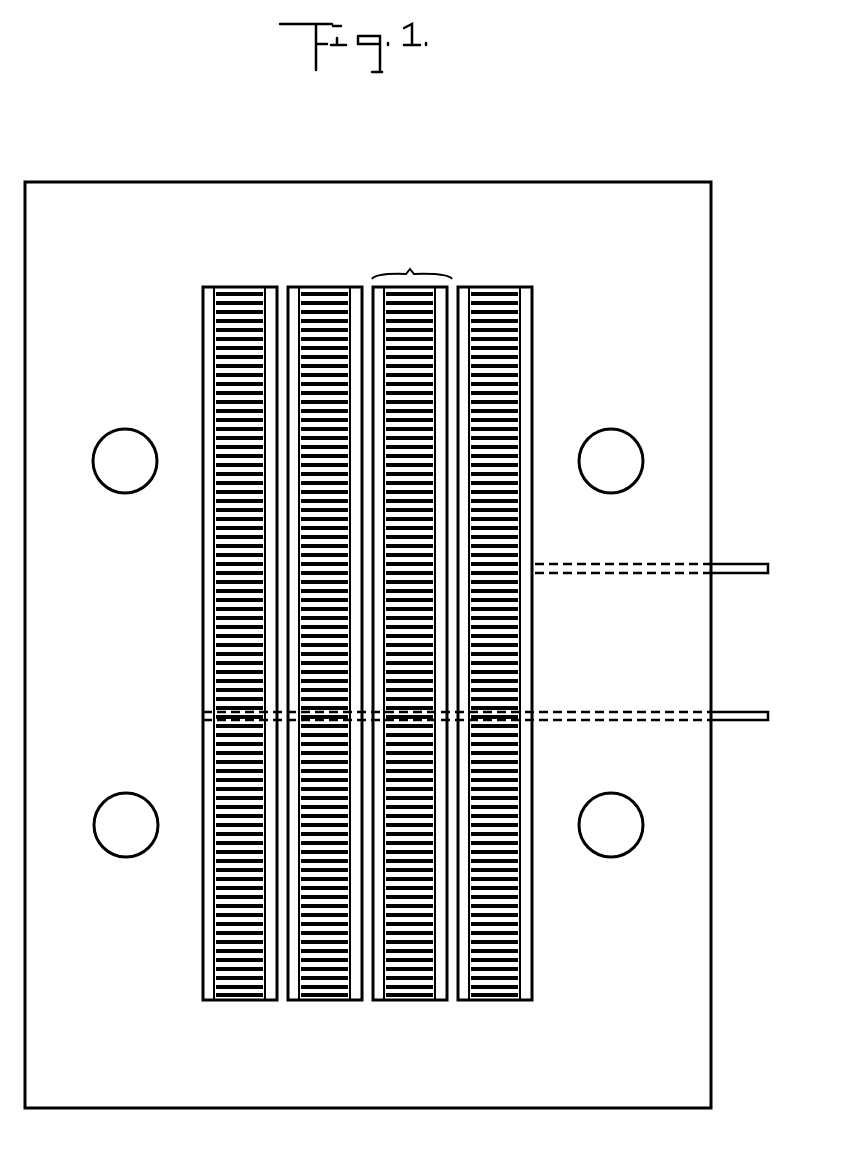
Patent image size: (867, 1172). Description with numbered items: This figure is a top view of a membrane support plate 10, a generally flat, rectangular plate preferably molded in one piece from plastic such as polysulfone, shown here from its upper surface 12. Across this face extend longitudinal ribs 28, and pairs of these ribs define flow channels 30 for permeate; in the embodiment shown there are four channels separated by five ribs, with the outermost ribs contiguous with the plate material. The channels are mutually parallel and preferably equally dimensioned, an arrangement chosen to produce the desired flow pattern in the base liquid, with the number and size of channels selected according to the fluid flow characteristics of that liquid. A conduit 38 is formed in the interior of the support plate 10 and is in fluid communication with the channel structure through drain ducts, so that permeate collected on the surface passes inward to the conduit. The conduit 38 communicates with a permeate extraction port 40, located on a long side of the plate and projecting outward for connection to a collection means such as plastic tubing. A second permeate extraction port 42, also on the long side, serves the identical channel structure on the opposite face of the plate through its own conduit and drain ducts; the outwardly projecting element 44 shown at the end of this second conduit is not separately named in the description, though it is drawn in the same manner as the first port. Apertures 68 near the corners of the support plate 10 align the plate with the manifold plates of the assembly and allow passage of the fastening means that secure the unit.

The support plate 10 is at (218, 205).
The upper surface 12 is at (365, 595).
The flow channels 30 is at (199, 279).
The longitudinal ribs 28 is at (278, 1003).
The conduit 38 is at (655, 710).
The permeate extraction port 40 is at (755, 710).
The second permeate extraction port 42 is at (648, 562).
The upper port 44 is at (750, 562).
The apertures 68 is at (122, 429).